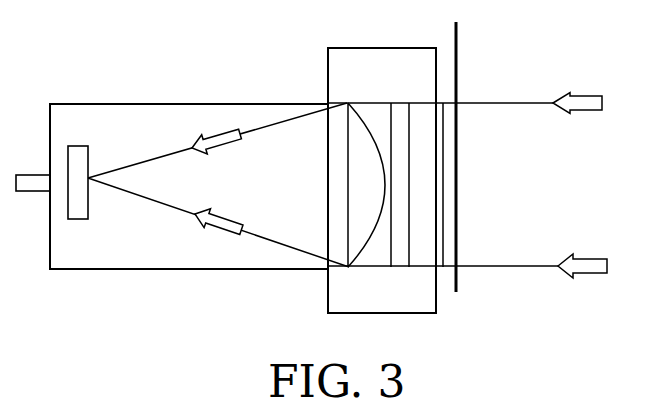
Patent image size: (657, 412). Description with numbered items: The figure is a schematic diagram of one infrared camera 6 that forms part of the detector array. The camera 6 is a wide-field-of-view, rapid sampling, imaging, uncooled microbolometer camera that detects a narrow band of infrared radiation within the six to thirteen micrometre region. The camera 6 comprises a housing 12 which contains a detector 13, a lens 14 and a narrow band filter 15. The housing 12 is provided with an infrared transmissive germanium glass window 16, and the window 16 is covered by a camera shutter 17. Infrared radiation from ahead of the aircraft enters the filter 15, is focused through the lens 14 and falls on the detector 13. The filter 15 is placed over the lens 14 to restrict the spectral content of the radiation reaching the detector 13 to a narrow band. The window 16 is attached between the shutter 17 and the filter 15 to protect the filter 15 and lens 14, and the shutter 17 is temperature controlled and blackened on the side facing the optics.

The camera 6 is at (145, 123).
The housing 12 is at (135, 270).
The detector 13 is at (78, 200).
The lens 14 is at (358, 120).
The narrow band filter 15 is at (400, 243).
The window 16 is at (440, 187).
The camera shutter 17 is at (458, 73).